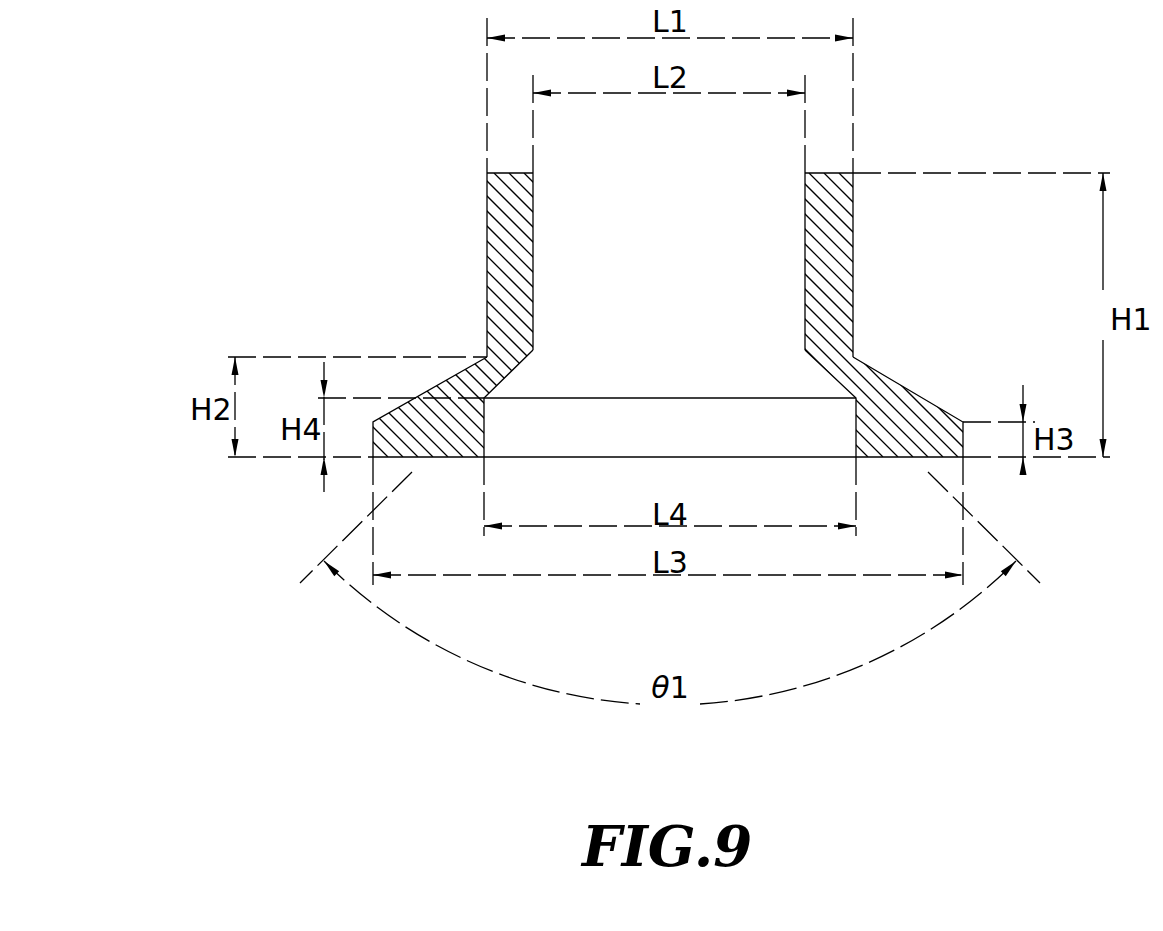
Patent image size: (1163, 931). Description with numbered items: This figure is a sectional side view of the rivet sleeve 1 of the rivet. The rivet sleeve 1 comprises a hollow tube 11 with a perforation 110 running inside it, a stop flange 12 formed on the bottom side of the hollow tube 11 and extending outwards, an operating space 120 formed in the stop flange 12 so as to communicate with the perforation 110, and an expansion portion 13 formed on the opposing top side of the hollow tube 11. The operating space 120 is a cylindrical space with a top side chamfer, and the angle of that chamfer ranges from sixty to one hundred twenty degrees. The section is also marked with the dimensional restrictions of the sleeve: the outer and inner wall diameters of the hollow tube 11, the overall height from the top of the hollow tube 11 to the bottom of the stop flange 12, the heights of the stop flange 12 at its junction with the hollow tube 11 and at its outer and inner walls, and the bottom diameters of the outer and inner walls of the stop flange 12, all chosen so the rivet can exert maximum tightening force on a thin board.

The rivet sleeve 1 is at (460, 322).
The hollow tube 11 is at (497, 305).
The stop flange 12 is at (890, 392).
The expansion portion 13 is at (520, 172).
The perforation 110 is at (578, 212).
The operating space 120 is at (578, 372).